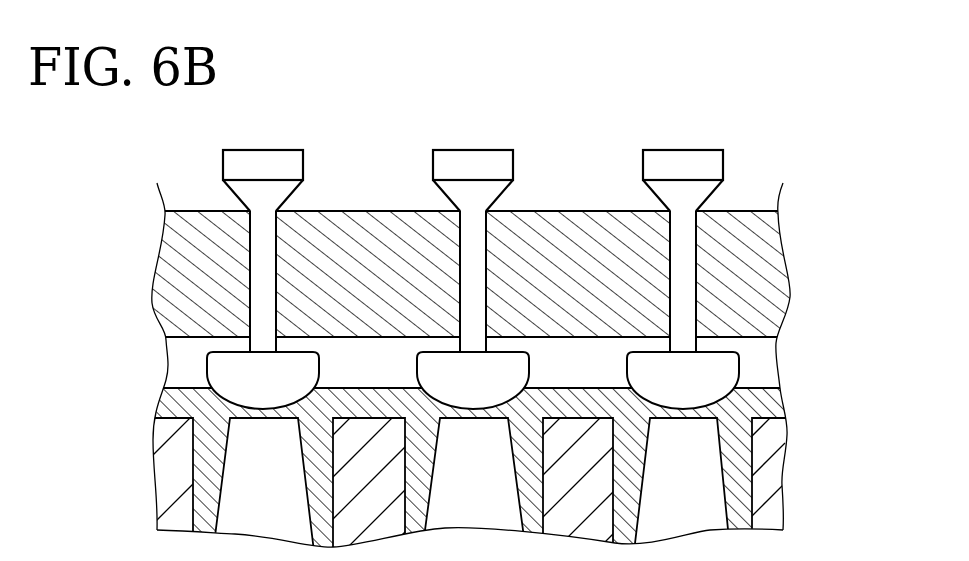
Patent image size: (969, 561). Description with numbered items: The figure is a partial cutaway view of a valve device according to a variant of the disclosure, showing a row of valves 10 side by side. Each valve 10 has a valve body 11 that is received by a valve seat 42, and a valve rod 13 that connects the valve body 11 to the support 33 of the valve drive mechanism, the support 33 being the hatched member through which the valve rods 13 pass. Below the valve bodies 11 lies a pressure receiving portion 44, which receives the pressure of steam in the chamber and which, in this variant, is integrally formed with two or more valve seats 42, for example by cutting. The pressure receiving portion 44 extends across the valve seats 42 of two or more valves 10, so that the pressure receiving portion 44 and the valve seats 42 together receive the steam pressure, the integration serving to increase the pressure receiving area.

The valve 10 is at (524, 140).
The valve body 11 is at (228, 352).
The valve rod 13 is at (280, 277).
The support 33 is at (750, 208).
The valve seat 42 is at (612, 466).
The pressure receiving portion 44 is at (357, 388).